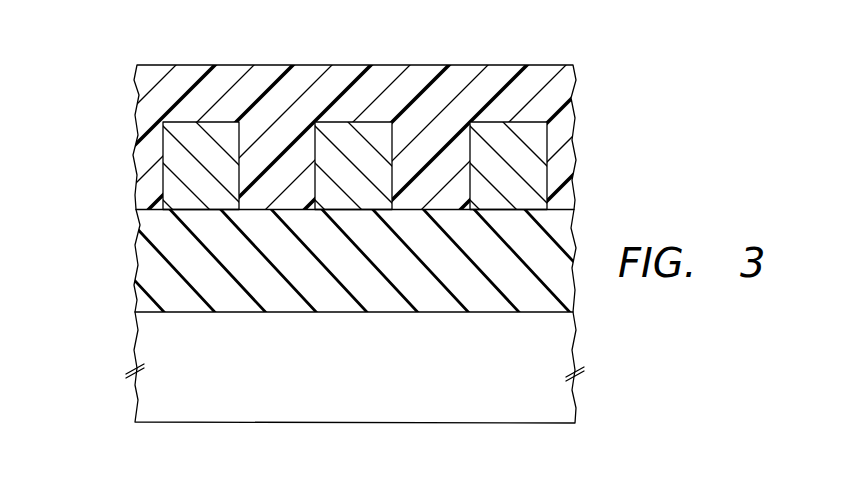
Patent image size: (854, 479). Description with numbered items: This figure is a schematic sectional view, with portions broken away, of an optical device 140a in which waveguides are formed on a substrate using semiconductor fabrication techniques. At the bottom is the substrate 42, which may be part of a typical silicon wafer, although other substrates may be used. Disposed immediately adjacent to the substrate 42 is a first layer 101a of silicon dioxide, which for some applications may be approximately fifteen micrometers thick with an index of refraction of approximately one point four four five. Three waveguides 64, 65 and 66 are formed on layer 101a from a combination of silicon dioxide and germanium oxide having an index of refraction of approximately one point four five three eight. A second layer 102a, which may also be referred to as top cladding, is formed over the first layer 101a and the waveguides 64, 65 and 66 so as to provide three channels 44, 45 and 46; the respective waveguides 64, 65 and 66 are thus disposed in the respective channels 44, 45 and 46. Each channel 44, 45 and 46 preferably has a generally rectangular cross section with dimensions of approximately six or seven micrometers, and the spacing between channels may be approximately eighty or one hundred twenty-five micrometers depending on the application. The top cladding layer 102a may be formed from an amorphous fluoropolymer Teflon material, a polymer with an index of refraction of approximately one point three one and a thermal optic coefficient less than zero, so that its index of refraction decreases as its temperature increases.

The substrate 42 is at (137, 395).
The layer of silicon dioxide 101a is at (137, 262).
The second layer 102a is at (140, 77).
The optical device 140a is at (101, 215).
The channel 44 is at (163, 141).
The channel 45 is at (315, 141).
The channel 46 is at (470, 141).
The waveguide 64 is at (217, 180).
The waveguide 65 is at (370, 180).
The waveguide 66 is at (525, 180).